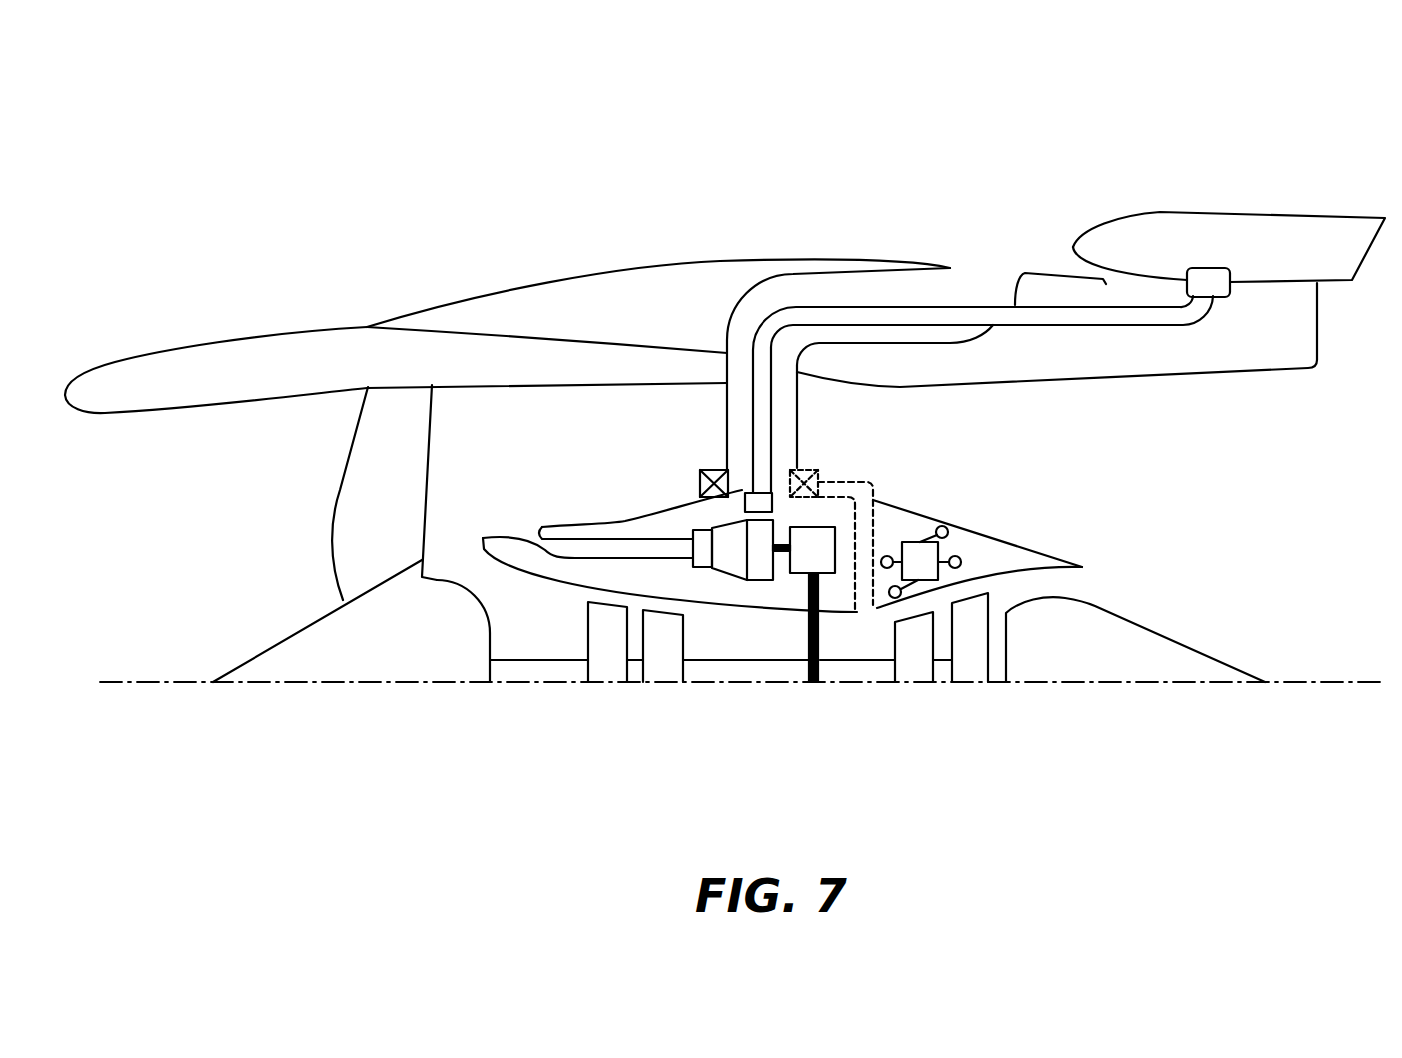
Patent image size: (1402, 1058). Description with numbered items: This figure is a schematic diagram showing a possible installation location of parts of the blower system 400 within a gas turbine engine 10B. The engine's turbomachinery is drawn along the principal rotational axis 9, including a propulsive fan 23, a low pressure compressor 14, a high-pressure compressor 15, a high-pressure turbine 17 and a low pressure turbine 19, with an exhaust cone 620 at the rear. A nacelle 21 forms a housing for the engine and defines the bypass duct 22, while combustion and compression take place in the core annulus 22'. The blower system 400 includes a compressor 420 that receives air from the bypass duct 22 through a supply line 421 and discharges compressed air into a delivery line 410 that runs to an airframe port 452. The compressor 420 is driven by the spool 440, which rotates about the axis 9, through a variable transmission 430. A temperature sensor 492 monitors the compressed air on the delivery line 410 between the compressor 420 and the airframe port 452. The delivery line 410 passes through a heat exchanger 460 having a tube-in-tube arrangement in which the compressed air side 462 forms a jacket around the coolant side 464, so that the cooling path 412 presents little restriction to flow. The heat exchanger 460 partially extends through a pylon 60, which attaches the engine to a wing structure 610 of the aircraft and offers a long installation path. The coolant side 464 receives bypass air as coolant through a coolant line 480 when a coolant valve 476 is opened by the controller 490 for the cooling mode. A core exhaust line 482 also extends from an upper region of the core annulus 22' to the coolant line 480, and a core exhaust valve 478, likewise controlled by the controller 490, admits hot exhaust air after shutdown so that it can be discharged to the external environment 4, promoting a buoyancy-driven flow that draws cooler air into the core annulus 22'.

The gas turbine engine 10B is at (158, 146).
The principal rotational axis 9 is at (1297, 688).
The nacelle 21 is at (203, 337).
The pylon 60 is at (550, 268).
The propulsive fan 23 is at (340, 490).
The bypass duct 22 is at (504, 441).
The core annulus 22' is at (694, 631).
The heat exchanger 460 is at (738, 288).
The compressed air side 462 is at (772, 330).
The coolant side 464 is at (866, 292).
The coolant line 480 is at (740, 400).
The temperature sensor 492 is at (645, 513).
The supply line 421 is at (537, 543).
The compressor 420 is at (728, 547).
The variable transmission 430 is at (820, 550).
The spool 440 is at (728, 672).
The coolant valve 476 is at (712, 470).
The core exhaust valve 478 is at (840, 468).
The core exhaust line 482 is at (865, 495).
The controller 490 is at (925, 555).
The low pressure compressor 14 is at (607, 668).
The high-pressure compressor 15 is at (663, 663).
The high-pressure turbine 17 is at (912, 668).
The low pressure turbine 19 is at (972, 662).
The exhaust cone 620 is at (1135, 655).
The blower system 400 is at (1168, 491).
The external environment 4 is at (994, 235).
The delivery line 410 is at (1072, 317).
The cooling path 412 is at (915, 315).
The wing structure 610 is at (1305, 210).
The airframe port 452 is at (1210, 282).